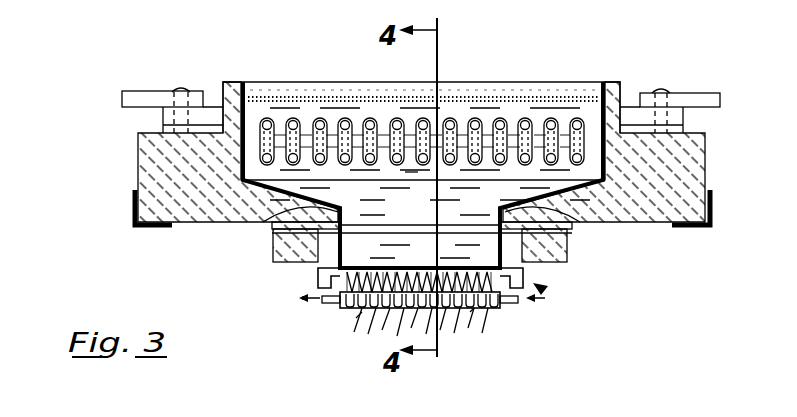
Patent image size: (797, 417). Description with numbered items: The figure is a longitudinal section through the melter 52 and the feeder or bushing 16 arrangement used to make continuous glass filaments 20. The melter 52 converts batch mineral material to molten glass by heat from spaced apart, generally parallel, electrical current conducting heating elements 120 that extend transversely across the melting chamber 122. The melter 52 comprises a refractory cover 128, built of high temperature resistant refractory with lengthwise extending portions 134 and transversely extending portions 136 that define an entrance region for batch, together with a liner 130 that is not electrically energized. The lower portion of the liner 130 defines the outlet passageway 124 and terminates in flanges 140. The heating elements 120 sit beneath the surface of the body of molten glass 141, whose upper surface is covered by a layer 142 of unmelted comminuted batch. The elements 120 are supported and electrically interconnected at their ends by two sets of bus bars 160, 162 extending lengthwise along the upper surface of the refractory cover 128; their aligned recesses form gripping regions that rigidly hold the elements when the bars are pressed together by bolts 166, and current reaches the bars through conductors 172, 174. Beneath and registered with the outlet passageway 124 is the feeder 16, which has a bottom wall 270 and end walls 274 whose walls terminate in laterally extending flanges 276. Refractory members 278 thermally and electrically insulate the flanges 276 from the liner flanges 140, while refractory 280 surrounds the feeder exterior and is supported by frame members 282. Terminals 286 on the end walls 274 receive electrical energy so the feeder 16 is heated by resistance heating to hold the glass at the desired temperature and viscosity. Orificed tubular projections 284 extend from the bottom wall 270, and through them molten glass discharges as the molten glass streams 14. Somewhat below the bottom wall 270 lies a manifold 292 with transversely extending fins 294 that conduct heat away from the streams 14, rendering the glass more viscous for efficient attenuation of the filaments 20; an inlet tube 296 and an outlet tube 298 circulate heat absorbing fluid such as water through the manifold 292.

The molten glass streams 14 is at (356, 318).
The feeder or bushing 16 is at (545, 291).
The continuous glass filaments 20 is at (472, 312).
The melter 52 is at (122, 142).
The heating elements 120 is at (577, 125).
The melting chamber 122 is at (508, 90).
The outlet passageway 124 is at (485, 210).
The refractory cover 128 is at (700, 148).
The liner 130 is at (243, 155).
The lengthwise extending portions 134 is at (523, 118).
The transversely extending portions 136 is at (247, 44).
The flanges 140 is at (272, 224).
The body of molten glass 141 is at (412, 173).
The layer of unmelted batch mineral material 142 is at (367, 100).
The bus bars 160 is at (212, 107).
The bus bars 162 is at (162, 127).
The bolts 166 is at (176, 89).
The conductors 172 is at (122, 99).
The conductors 174 is at (717, 100).
The bottom wall 270 is at (322, 290).
The end walls 274 is at (300, 263).
The flanges 276 is at (330, 242).
The refractory members 278 is at (310, 231).
The refractory 280 is at (318, 270).
The frame members 282 is at (335, 262).
The tubular projections 284 is at (442, 310).
The terminals 286 is at (553, 300).
The manifold 292 is at (492, 312).
The fins 294 is at (425, 310).
The inlet tube 296 is at (514, 303).
The outlet tube 298 is at (303, 300).